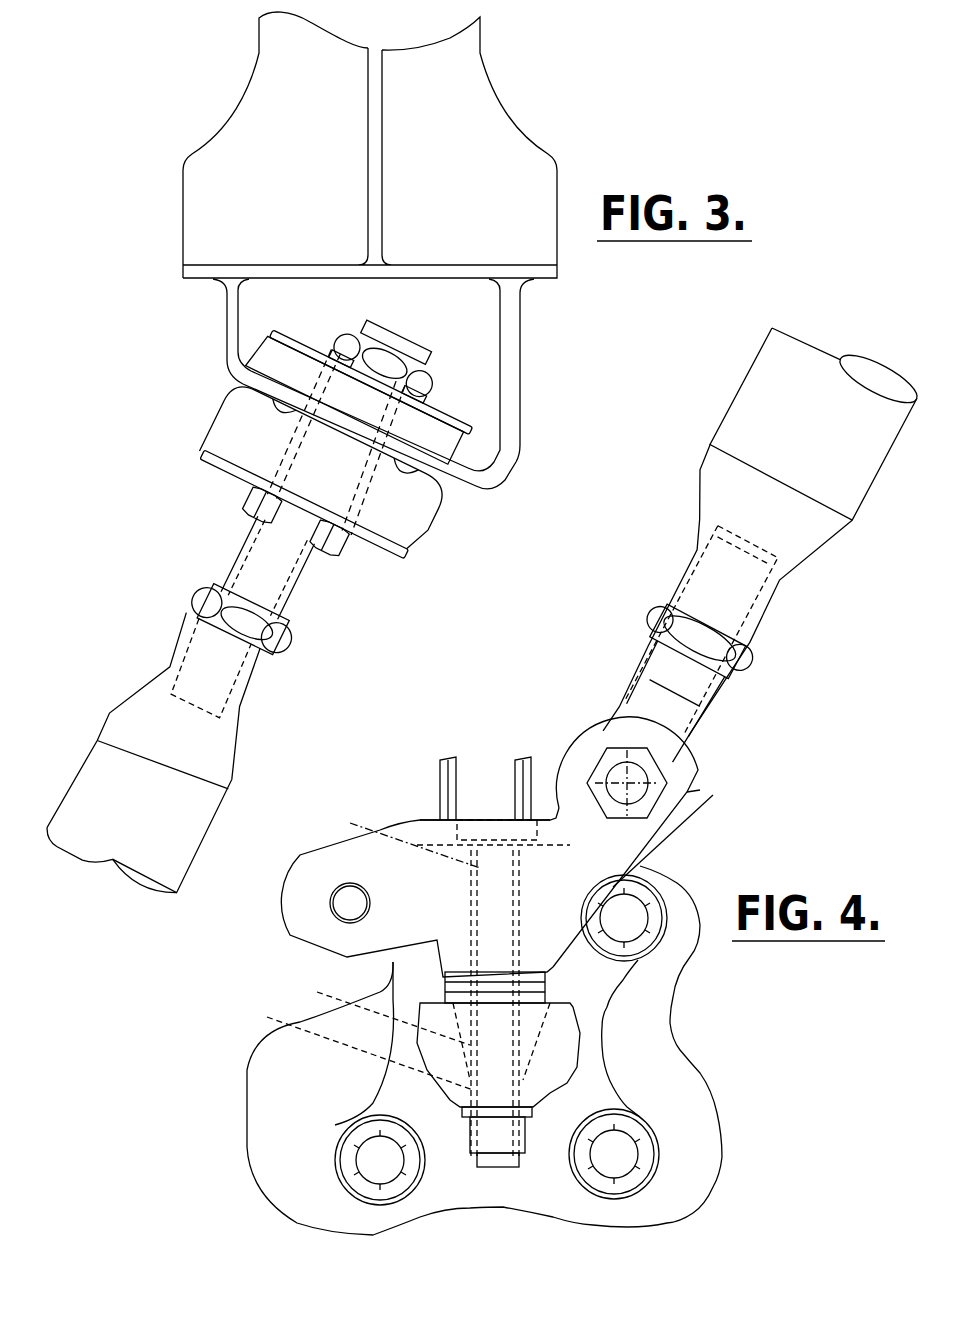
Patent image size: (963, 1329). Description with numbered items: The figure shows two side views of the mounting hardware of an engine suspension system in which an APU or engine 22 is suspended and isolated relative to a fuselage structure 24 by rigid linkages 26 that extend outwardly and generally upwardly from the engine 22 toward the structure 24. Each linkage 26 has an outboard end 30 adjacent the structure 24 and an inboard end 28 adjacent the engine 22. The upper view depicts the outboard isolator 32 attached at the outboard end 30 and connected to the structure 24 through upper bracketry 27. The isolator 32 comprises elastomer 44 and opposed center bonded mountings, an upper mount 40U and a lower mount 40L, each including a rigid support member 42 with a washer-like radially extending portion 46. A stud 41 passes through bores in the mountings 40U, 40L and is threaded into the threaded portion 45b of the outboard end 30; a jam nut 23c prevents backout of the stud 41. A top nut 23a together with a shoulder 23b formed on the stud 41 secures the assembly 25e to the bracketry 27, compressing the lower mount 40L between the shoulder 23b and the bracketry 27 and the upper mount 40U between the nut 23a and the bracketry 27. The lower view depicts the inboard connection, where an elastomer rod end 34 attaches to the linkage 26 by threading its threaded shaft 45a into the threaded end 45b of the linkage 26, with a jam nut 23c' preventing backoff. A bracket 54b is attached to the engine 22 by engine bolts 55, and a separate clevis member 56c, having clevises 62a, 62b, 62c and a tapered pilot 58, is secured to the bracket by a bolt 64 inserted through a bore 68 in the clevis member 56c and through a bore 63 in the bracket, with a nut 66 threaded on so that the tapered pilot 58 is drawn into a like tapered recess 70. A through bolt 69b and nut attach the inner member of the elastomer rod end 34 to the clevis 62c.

In FIG. 4, the engine 22 is at (700, 1143).
In FIG. 3, the top nut 23a is at (425, 380).
In FIG. 3, the shoulder 23b is at (256, 503).
In FIG. 3, the jam nut 23c is at (261, 624).
In FIG. 4, the jam nut 23c' is at (742, 641).
In FIG. 3, the fuselage structure 24 is at (525, 190).
In FIG. 3, the assembly 25e is at (600, 572).
In FIG. 3, the rigid linkage 26 is at (151, 843).
In FIG. 4, the rigid linkage 26 is at (751, 431).
In FIG. 3, the upper bracketry 27 is at (508, 366).
In FIG. 4, the inboard end 28 is at (822, 538).
In FIG. 3, the outboard end 30 is at (215, 748).
In FIG. 3, the outboard isolator 32 is at (228, 383).
In FIG. 4, the elastomer rod end 34 is at (699, 765).
In FIG. 3, the upper mount 40U is at (465, 455).
In FIG. 3, the lower mount 40L is at (428, 547).
In FIG. 3, the stud 41 is at (300, 590).
In FIG. 3, the rigid support member 42 is at (465, 413).
In FIG. 3, the elastomer 44 is at (278, 352).
In FIG. 4, the threaded shaft 45a is at (712, 700).
In FIG. 4, the threaded portion 45b is at (760, 600).
In FIG. 3, the radially extending portion 46 is at (307, 345).
In FIG. 4, the bracket 54b is at (608, 1020).
In FIG. 4, the engine bolt 55 is at (655, 905).
In FIG. 4, the clevis member 56c is at (410, 820).
In FIG. 4, the tapered pilot 58 is at (317, 992).
In FIG. 4, the clevis 62a is at (302, 906).
In FIG. 4, the clevis 62b is at (447, 770).
In FIG. 4, the clevis 62c is at (667, 805).
In FIG. 4, the bore 63 is at (470, 1093).
In FIG. 4, the bolt 64 is at (525, 830).
In FIG. 4, the nut 66 is at (462, 1138).
In FIG. 4, the bore 68 is at (350, 823).
In FIG. 4, the through bolt 69b is at (610, 760).
In FIG. 4, the tapered recess 70 is at (267, 1017).